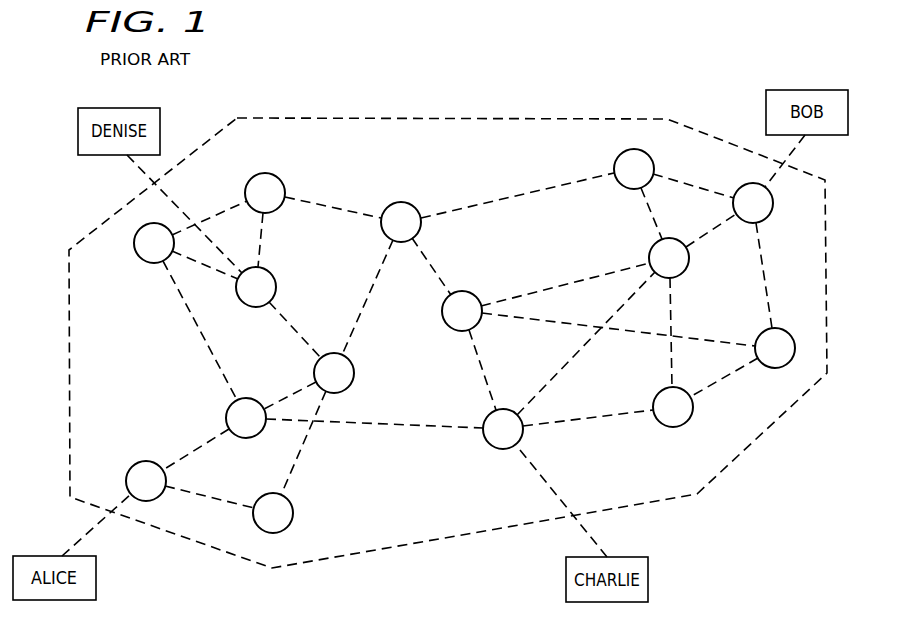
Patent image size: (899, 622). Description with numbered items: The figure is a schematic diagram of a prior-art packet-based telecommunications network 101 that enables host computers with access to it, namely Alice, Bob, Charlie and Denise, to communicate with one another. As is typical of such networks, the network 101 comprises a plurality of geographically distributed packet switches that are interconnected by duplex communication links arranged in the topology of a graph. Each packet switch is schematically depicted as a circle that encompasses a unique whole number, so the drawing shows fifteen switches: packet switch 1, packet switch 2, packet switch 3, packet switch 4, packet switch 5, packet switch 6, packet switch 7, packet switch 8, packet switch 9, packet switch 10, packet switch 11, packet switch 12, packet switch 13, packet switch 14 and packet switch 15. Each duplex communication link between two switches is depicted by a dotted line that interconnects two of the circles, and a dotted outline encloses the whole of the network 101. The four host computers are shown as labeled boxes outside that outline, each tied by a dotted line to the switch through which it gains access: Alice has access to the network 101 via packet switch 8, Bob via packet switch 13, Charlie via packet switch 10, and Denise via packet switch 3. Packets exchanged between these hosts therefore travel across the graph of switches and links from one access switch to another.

The network 101 is at (502, 118).
The packet switch 1 is at (154, 243).
The packet switch 2 is at (265, 193).
The packet switch 3 is at (256, 287).
The packet switch 4 is at (401, 222).
The packet switch 5 is at (334, 373).
The packet switch 6 is at (462, 311).
The packet switch 7 is at (246, 418).
The packet switch 8 is at (146, 481).
The packet switch 9 is at (273, 513).
The packet switch 10 is at (503, 429).
The packet switch 11 is at (634, 169).
The packet switch 12 is at (669, 258).
The packet switch 13 is at (753, 203).
The packet switch 14 is at (775, 348).
The packet switch 15 is at (673, 407).